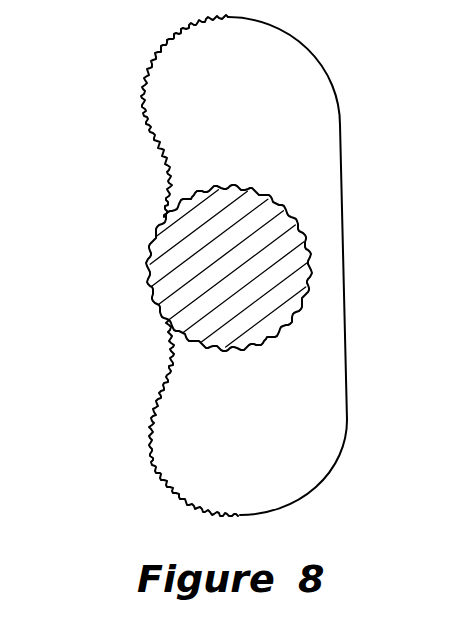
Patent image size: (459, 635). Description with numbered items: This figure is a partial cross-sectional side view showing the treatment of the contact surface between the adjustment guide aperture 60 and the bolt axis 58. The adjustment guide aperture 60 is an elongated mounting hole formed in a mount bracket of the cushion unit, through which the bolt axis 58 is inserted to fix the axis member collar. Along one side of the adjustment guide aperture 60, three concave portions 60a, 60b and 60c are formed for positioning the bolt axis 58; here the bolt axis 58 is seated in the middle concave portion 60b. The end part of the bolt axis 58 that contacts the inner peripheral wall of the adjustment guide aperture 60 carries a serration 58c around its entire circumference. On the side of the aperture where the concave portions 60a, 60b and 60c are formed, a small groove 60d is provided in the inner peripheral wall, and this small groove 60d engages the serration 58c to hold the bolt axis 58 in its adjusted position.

The adjustment guide aperture 60 is at (312, 181).
The concave portion 60a is at (162, 110).
The concave portion 60b is at (152, 282).
The concave portion 60c is at (170, 466).
The small groove 60d is at (178, 365).
The bolt axis 58 is at (277, 274).
The serration 58c is at (242, 349).